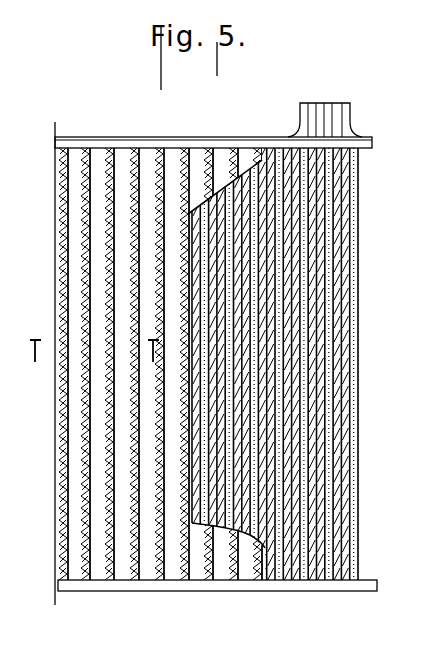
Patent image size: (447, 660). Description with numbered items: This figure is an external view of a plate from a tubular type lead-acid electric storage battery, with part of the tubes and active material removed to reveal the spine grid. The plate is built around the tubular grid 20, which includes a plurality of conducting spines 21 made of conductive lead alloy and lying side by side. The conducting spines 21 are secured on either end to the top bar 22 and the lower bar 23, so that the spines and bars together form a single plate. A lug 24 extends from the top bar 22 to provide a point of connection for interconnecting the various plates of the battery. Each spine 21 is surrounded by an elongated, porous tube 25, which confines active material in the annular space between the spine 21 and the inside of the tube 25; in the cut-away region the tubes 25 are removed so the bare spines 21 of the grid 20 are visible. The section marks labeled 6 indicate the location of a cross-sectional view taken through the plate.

The tubular grid 20 is at (392, 613).
The conducting spines 21 is at (320, 312).
The top bar 22 is at (197, 137).
The lower bar 23 is at (197, 592).
The lug 24 is at (340, 110).
The porous tube 25 is at (200, 157).
The section line 6- 6 is at (94, 338).